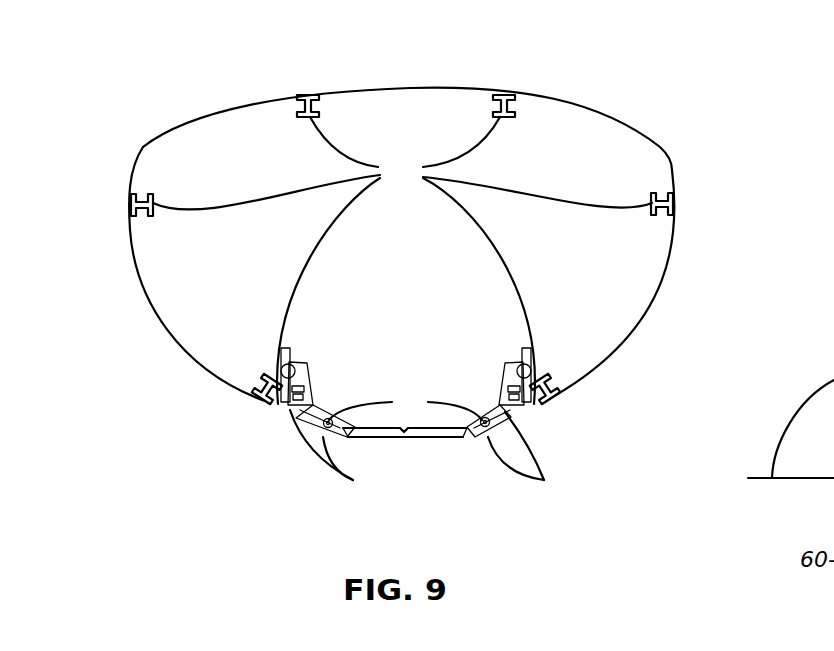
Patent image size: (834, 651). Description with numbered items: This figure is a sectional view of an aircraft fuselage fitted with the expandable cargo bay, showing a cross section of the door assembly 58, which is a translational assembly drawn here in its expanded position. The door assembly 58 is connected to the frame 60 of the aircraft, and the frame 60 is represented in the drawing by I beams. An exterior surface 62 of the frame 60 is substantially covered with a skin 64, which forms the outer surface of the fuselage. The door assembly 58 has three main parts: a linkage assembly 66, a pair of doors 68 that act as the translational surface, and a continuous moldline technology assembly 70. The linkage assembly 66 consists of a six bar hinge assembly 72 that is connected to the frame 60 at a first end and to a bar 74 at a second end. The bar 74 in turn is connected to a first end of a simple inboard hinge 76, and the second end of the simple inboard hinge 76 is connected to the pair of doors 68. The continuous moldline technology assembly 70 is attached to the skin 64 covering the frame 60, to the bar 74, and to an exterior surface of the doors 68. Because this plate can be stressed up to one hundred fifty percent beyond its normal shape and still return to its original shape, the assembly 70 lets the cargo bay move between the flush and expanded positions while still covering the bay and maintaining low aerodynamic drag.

The door assembly 58 is at (408, 441).
The frame 60 is at (402, 260).
The exterior surface 62 is at (307, 95).
The skin 64 is at (143, 147).
The linkage assembly 66 is at (283, 432).
The pair of doors 68 is at (405, 440).
The continuous moldline technology (CMT) assembly 70 is at (434, 455).
The six bar hinge assembly 72 is at (312, 373).
The bar 74 is at (316, 412).
The simple inboard hinge 76 is at (405, 406).